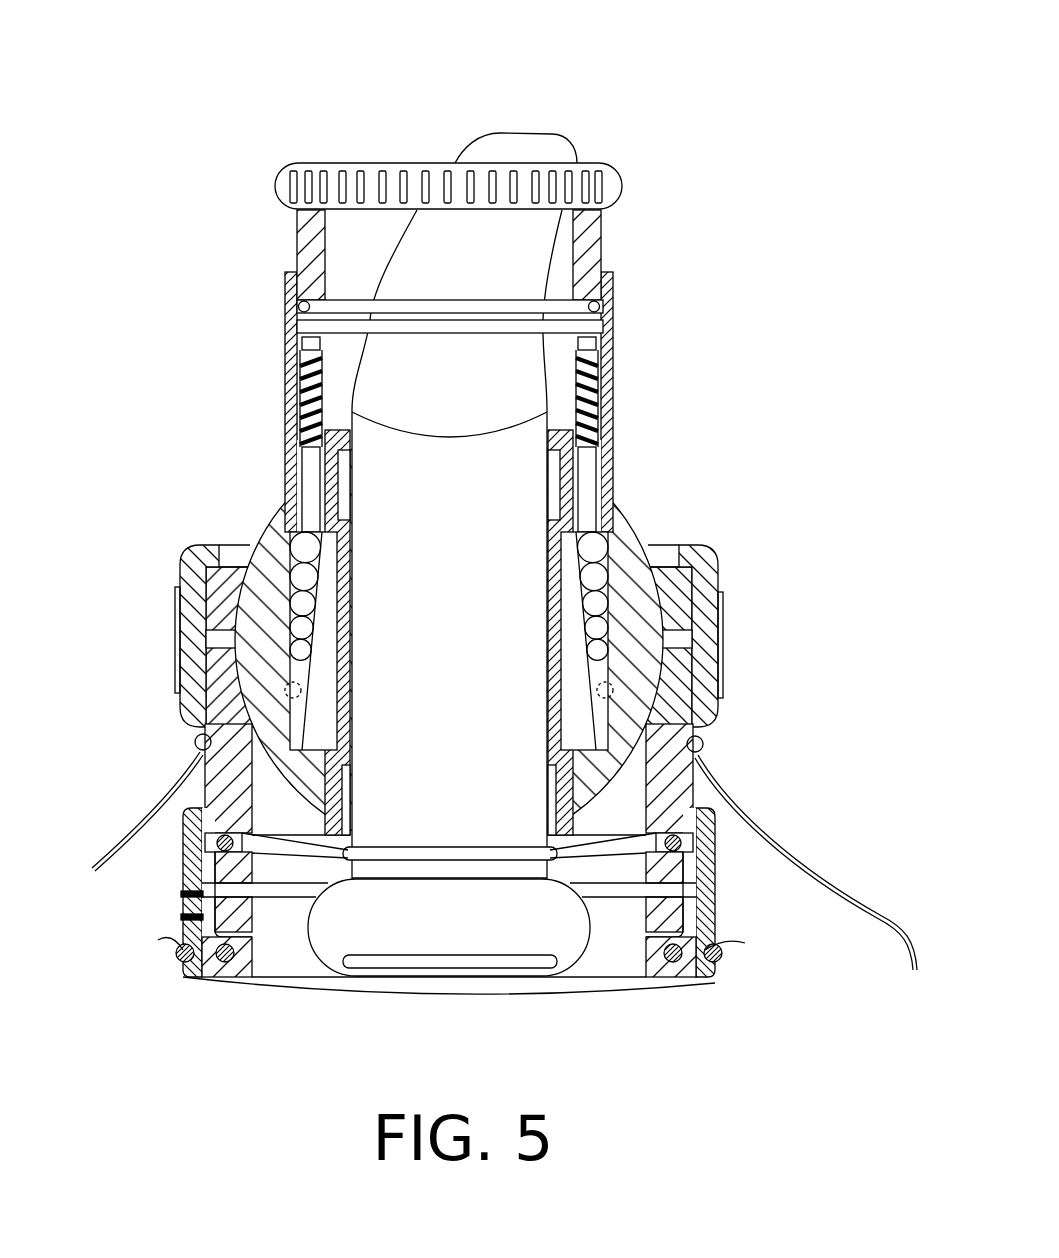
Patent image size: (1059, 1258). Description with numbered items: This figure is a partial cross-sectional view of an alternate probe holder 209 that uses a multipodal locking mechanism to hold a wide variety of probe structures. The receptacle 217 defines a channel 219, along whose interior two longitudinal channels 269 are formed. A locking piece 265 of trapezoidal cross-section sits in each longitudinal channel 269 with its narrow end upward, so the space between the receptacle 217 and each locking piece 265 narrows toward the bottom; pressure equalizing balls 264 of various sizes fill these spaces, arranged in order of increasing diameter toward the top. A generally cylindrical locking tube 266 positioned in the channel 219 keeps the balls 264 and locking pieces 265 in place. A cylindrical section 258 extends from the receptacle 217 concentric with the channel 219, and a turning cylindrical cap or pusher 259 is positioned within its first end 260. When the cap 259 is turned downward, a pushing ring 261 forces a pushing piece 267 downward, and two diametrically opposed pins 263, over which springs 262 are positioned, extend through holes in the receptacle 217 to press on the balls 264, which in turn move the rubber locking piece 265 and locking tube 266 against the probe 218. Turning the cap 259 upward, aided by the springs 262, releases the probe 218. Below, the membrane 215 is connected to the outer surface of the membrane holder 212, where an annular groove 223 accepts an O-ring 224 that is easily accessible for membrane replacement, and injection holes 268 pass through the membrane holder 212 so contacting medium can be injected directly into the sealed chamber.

The probe holder 209 is at (613, 92).
The membrane holder 212 is at (707, 908).
The membrane 215 is at (448, 992).
The receptacle 217 is at (643, 615).
The probe 218 is at (468, 563).
The channel 219 is at (598, 513).
The annular groove 223 is at (697, 987).
The O-ring 224 is at (720, 957).
The cylindrical section 258 is at (615, 330).
The turning cylindrical cap or pusher 259 is at (272, 210).
The first end 260 is at (610, 273).
The pushing ring 261 is at (307, 297).
The springs 262 is at (297, 380).
The pins 263 is at (310, 470).
The pressure equalizing balls 264 is at (295, 607).
The locking piece 265 is at (320, 735).
The locking tube 266 is at (583, 800).
The pushing piece 267 is at (305, 328).
The injection holes 268 is at (181, 917).
The longitudinal channels 269 is at (302, 690).